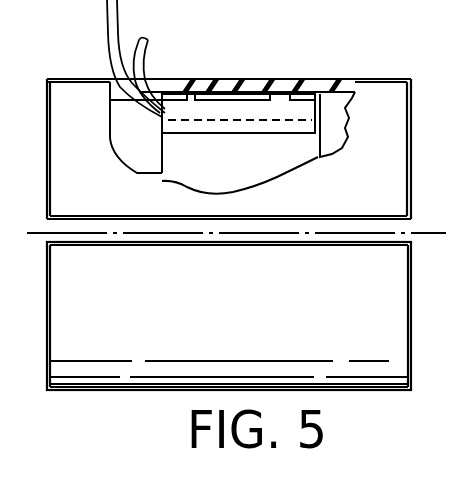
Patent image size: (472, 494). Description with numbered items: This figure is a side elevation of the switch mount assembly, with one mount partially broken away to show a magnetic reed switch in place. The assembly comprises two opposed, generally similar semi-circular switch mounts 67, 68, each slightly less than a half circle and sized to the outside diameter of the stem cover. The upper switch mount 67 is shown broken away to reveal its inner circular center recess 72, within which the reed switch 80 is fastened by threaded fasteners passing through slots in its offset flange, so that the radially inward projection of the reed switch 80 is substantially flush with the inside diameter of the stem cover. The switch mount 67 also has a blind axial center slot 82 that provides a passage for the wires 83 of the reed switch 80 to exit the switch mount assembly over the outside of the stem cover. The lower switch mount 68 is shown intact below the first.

The switch mount 67 is at (358, 74).
The switch mount 68 is at (391, 303).
The inner circular center recess 72 is at (176, 182).
The reed switch 80 is at (249, 128).
The blind axial center slot 82 is at (148, 86).
The wires 83 is at (108, 30).